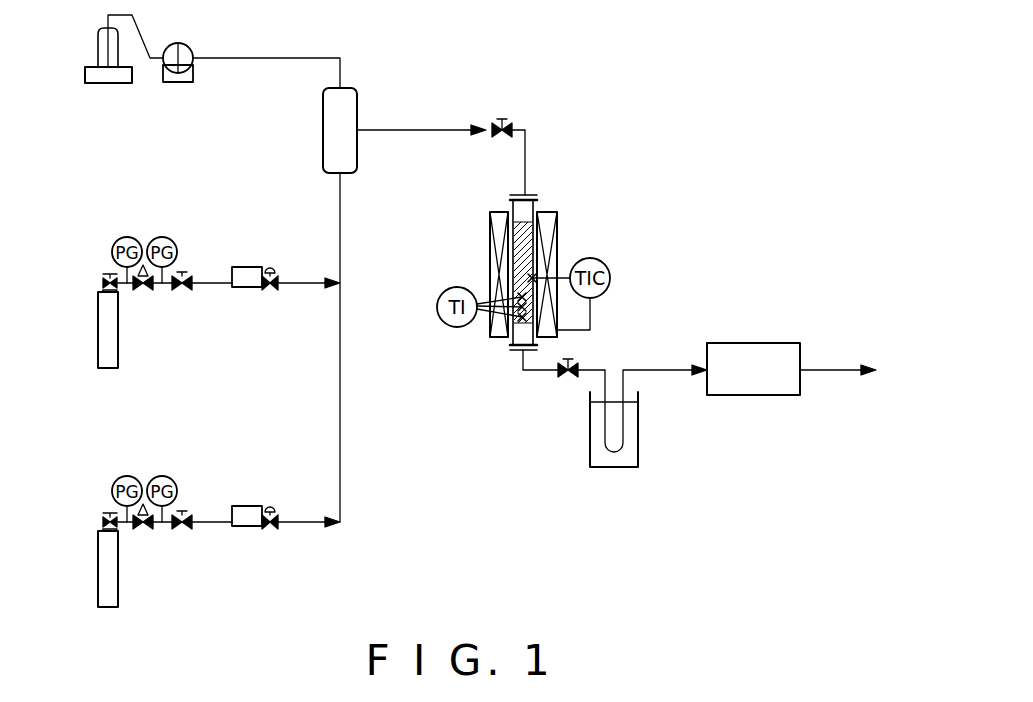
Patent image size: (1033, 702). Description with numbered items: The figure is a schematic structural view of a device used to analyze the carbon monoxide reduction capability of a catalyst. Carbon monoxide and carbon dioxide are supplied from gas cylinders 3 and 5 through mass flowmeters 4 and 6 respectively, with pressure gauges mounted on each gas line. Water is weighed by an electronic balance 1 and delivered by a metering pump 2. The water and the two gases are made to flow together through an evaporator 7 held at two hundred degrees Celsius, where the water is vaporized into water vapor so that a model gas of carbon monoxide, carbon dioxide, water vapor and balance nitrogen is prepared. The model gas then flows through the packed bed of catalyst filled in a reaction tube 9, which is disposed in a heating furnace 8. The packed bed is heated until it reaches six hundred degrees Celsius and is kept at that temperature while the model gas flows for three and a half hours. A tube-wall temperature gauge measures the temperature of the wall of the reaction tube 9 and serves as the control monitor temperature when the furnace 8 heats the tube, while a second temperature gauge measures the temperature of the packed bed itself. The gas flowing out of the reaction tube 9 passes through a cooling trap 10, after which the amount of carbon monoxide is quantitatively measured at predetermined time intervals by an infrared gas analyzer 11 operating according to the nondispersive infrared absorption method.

The electronic balance 1 is at (85, 71).
The metering pump 2 is at (175, 83).
The gas cylinder 3 is at (98, 333).
The mass flowmeter 4 is at (247, 288).
The gas cylinder 5 is at (98, 574).
The mass flowmeter 6 is at (247, 527).
The evaporator 7 is at (357, 97).
The heating furnace 8 is at (490, 254).
The reaction tube 9 is at (515, 352).
The cooling trap 10 is at (615, 467).
The infrared gas analyzer 11 is at (759, 396).